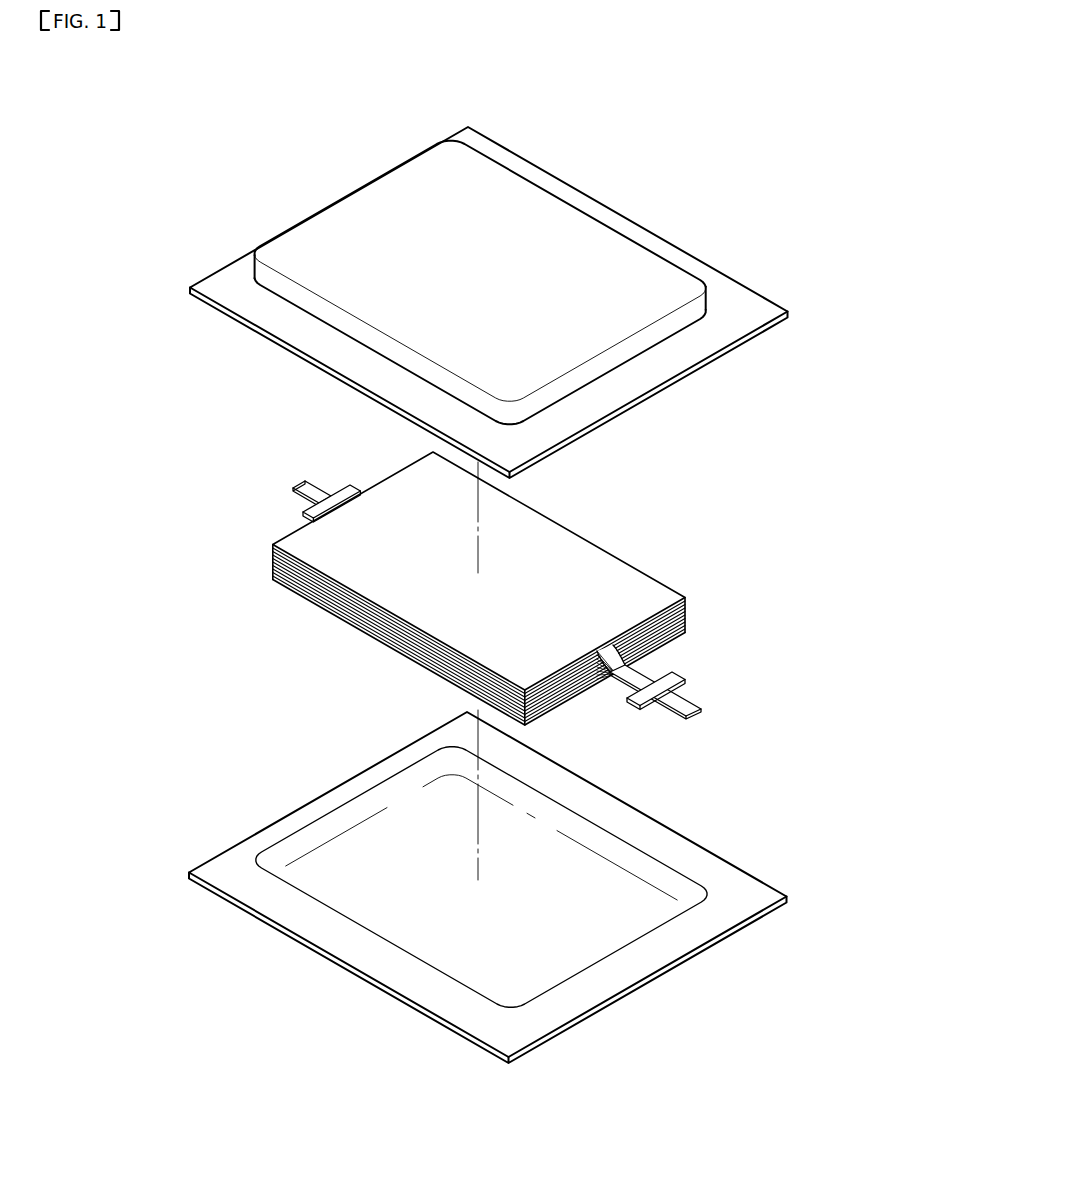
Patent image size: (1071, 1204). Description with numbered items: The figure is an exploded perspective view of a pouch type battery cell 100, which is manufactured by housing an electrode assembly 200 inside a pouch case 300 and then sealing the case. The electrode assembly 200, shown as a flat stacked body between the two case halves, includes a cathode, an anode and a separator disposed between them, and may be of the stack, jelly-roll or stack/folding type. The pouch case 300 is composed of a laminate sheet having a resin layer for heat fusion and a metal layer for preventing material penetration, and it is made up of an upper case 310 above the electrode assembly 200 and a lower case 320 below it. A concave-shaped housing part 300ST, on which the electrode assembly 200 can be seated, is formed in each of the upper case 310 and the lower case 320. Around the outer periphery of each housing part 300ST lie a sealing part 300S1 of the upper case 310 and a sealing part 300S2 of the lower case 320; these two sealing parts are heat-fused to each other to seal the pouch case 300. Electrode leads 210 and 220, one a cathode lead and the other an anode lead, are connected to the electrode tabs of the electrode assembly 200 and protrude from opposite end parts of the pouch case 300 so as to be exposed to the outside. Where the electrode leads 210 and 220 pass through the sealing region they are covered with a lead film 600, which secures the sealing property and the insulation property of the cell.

The pouch type battery cell 100 is at (362, 86).
The electrode assembly 200 is at (256, 553).
The electrode lead 210 is at (698, 716).
The electrode lead 220 is at (310, 490).
The pouch case 300 is at (880, 503).
The upper case 310 is at (706, 371).
The lower case 320 is at (711, 849).
The housing part 300ST is at (557, 222).
The sealing part of the upper case 300S1 is at (277, 313).
The sealing part of the lower case 300S2 is at (285, 905).
The lead film 600 is at (675, 679).